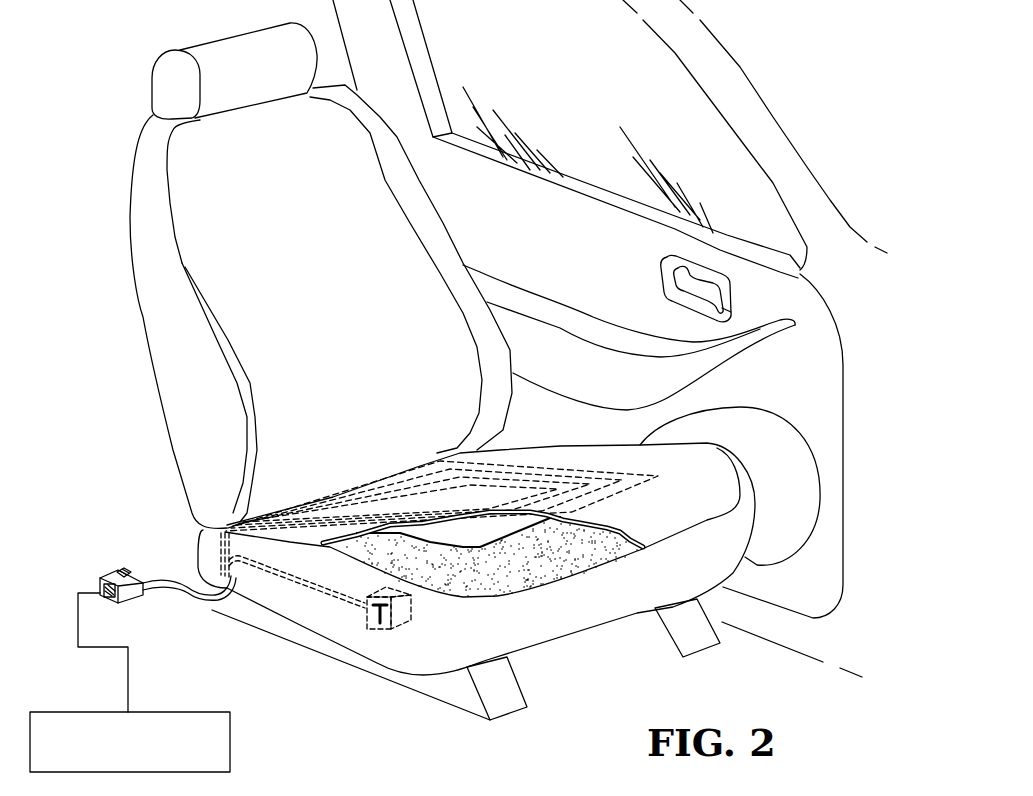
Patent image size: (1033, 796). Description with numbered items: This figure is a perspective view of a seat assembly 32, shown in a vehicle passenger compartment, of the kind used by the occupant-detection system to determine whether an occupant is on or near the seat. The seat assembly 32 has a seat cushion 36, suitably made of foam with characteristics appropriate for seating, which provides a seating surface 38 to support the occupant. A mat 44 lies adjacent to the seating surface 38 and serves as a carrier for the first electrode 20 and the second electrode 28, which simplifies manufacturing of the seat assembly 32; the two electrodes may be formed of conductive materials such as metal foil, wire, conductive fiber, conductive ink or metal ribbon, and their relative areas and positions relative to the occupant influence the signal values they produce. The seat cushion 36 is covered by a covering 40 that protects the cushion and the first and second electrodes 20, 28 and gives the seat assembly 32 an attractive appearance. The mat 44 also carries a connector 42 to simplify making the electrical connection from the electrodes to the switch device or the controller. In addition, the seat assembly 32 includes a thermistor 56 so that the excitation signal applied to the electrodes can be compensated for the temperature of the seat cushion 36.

The seat assembly 32 is at (140, 43).
The first electrode 20 is at (453, 498).
The mat 44 is at (420, 532).
The second electrode 28 is at (347, 515).
The seating surface 38 is at (677, 478).
The seat cushion 36 is at (613, 537).
The covering 40 is at (500, 511).
The connector 42 is at (118, 573).
The thermistor 56 is at (413, 613).